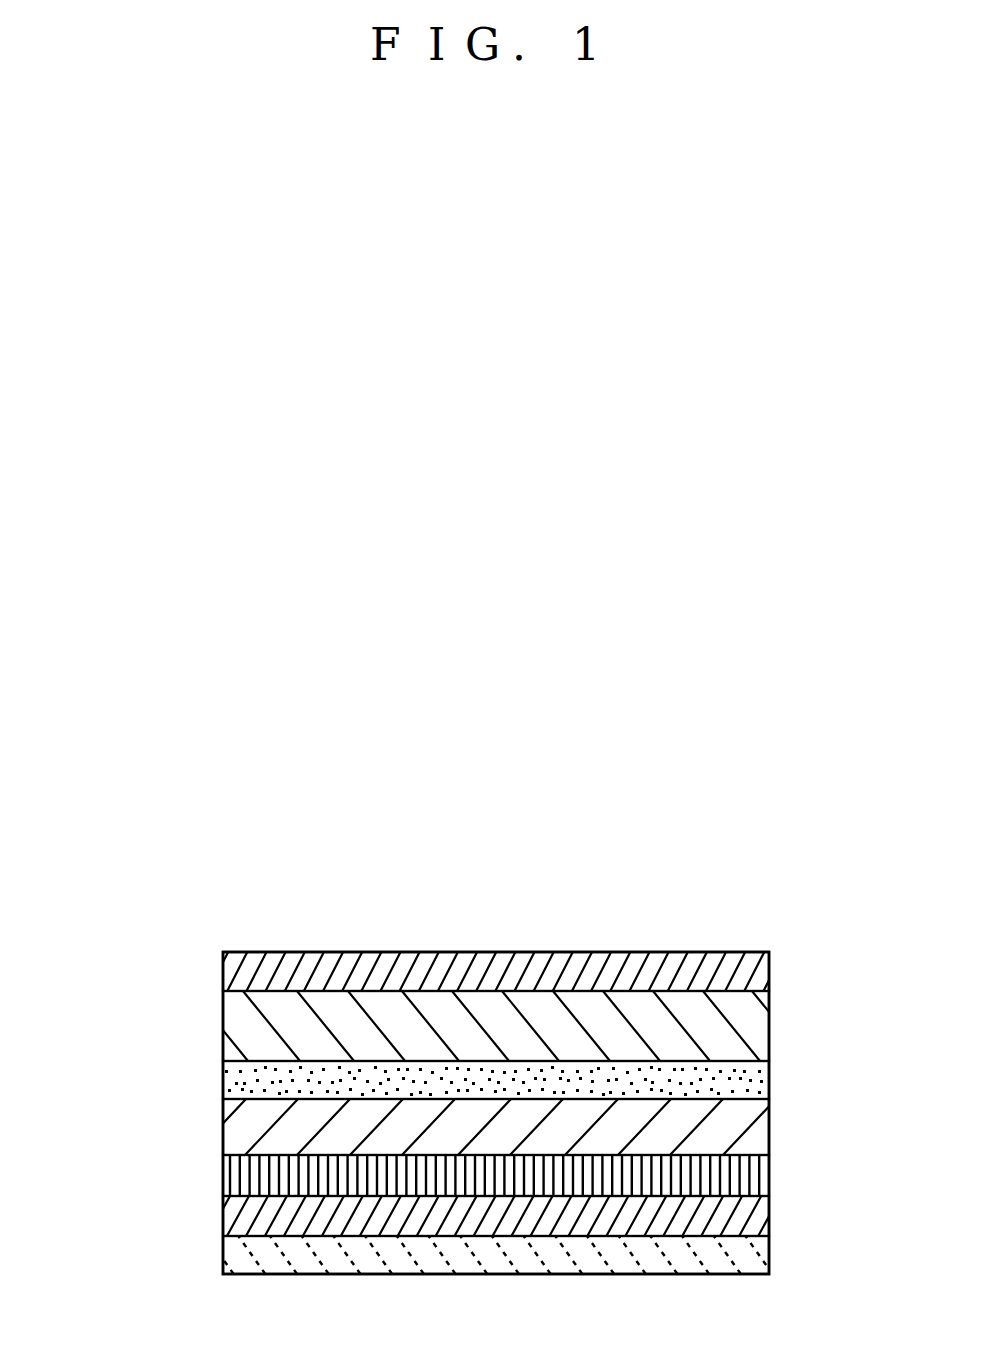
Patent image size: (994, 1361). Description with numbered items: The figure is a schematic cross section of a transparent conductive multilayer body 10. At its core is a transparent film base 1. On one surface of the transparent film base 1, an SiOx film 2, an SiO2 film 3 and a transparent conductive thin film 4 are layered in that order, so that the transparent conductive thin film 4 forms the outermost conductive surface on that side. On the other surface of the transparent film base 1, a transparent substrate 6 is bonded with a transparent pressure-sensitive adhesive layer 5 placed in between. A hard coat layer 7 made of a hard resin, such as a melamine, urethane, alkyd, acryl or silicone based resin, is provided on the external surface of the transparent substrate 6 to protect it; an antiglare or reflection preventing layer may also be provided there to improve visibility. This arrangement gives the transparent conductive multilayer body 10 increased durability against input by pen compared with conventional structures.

The transparent conductive multilayer body 10 is at (160, 882).
The hard coat layer 7 is at (769, 961).
The transparent substrate 6 is at (769, 1015).
The transparent pressure-sensitive adhesive layer 5 is at (769, 1077).
The transparent film base 1 is at (769, 1125).
The SiOx film 2 is at (769, 1177).
The SiO2 film 3 is at (769, 1212).
The transparent conductive thin film 4 is at (769, 1253).